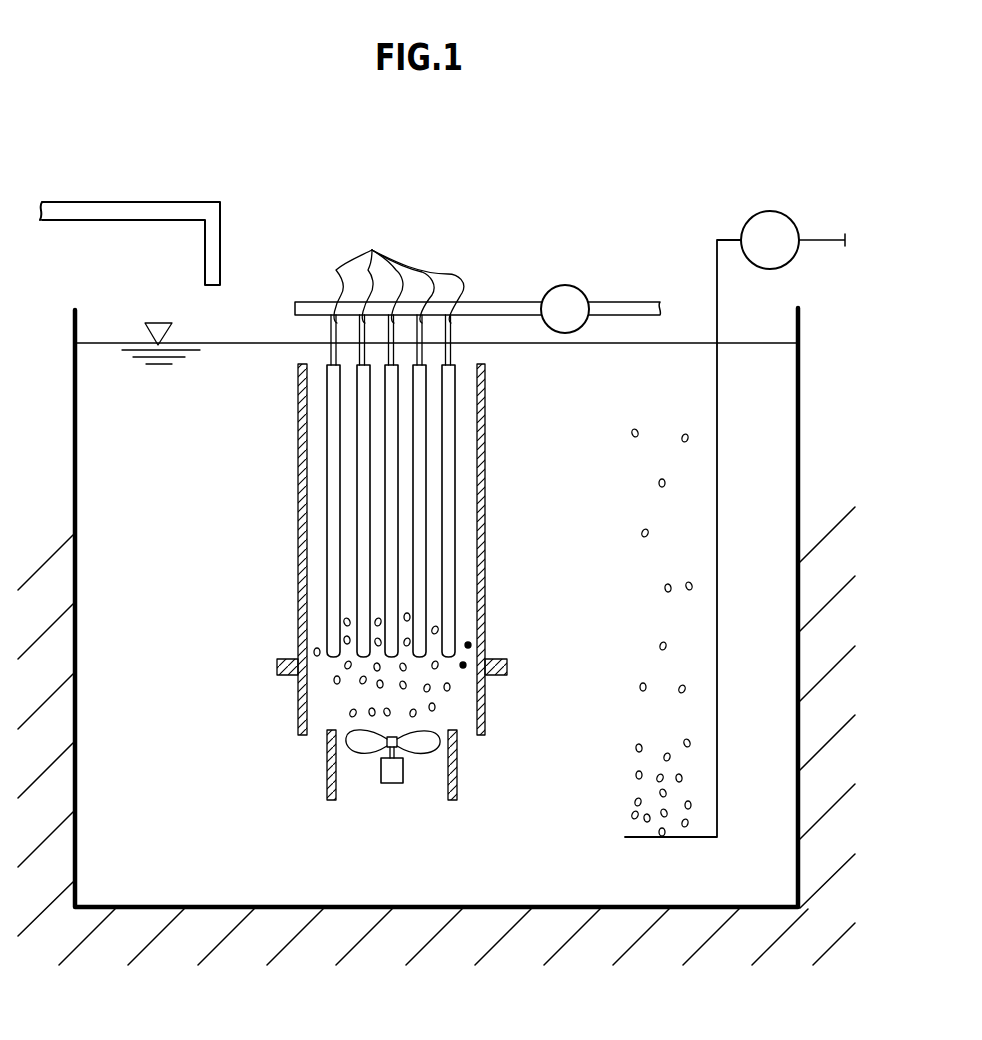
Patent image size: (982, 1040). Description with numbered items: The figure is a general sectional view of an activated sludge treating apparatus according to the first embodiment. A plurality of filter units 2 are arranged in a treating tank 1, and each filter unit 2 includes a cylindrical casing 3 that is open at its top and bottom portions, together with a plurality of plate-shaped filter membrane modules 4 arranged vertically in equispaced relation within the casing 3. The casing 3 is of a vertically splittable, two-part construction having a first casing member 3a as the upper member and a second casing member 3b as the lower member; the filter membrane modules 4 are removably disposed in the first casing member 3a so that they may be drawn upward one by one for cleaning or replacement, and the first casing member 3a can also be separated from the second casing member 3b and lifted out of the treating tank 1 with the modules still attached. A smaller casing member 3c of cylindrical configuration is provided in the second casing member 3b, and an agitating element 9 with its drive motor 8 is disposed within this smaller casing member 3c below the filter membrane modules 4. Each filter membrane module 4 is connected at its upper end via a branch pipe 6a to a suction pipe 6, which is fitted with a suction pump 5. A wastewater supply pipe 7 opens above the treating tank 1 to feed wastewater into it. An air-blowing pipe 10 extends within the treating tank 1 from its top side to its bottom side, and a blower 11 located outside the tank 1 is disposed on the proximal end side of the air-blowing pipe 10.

The treating tank 1 is at (800, 447).
The filter unit 2 is at (410, 609).
The cylindrical casing 3 is at (435, 609).
The first casing member 3a is at (485, 583).
The second casing member 3b is at (485, 705).
The smaller casing member 3c is at (457, 793).
The filter membrane module 4 is at (365, 412).
The suction pump 5 is at (565, 285).
The suction pipe 6 is at (492, 300).
The branch pipe 6a is at (399, 273).
The wastewater supply pipe 7 is at (184, 202).
The drive motor 8 is at (391, 783).
The agitating element 9 is at (420, 745).
The air-blowing pipe 10 is at (626, 840).
The blower 11 is at (785, 212).